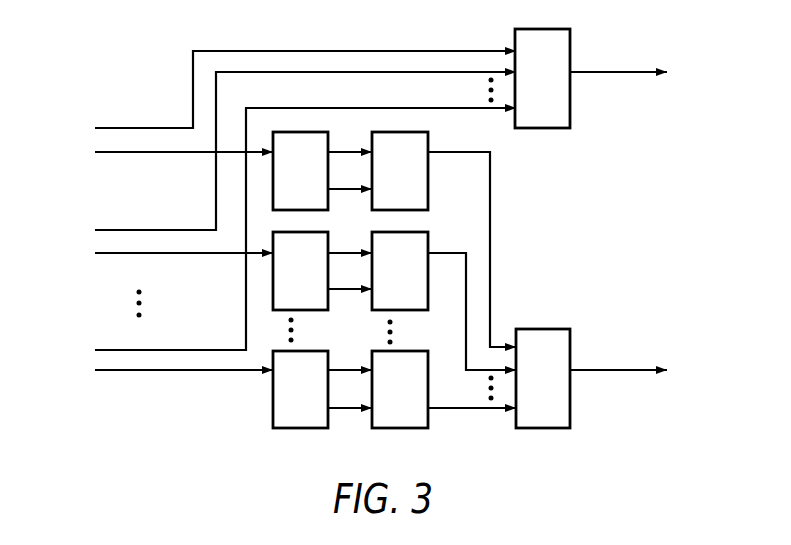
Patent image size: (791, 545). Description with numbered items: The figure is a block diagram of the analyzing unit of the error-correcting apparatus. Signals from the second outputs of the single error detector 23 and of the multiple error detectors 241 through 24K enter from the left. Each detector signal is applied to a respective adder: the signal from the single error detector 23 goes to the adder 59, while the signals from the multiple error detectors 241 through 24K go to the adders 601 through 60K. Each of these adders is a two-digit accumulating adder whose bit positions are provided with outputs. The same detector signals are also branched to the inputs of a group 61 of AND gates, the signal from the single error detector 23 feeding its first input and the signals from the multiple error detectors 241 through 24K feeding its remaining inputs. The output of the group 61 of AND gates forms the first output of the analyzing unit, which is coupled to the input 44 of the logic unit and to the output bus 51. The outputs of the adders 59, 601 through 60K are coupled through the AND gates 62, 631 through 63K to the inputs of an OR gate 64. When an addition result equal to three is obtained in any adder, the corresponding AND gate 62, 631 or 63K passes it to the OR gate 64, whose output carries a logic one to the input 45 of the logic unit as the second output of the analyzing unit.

The single error detector 23 is at (279, 110).
The multiple error detector 241 is at (279, 173).
The multiple error detector 24K is at (279, 250).
The input of logic unit 44 is at (644, 51).
The output bus 51 is at (644, 77).
The input of logic unit 45 is at (644, 374).
The adder 59 is at (328, 198).
The adder 601 is at (328, 298).
The adder 60K is at (272, 404).
The group of AND gates 61 is at (548, 128).
The AND gate 62 is at (428, 176).
The AND gate 631 is at (428, 303).
The AND gate 63K is at (428, 398).
The OR gate 64 is at (570, 412).